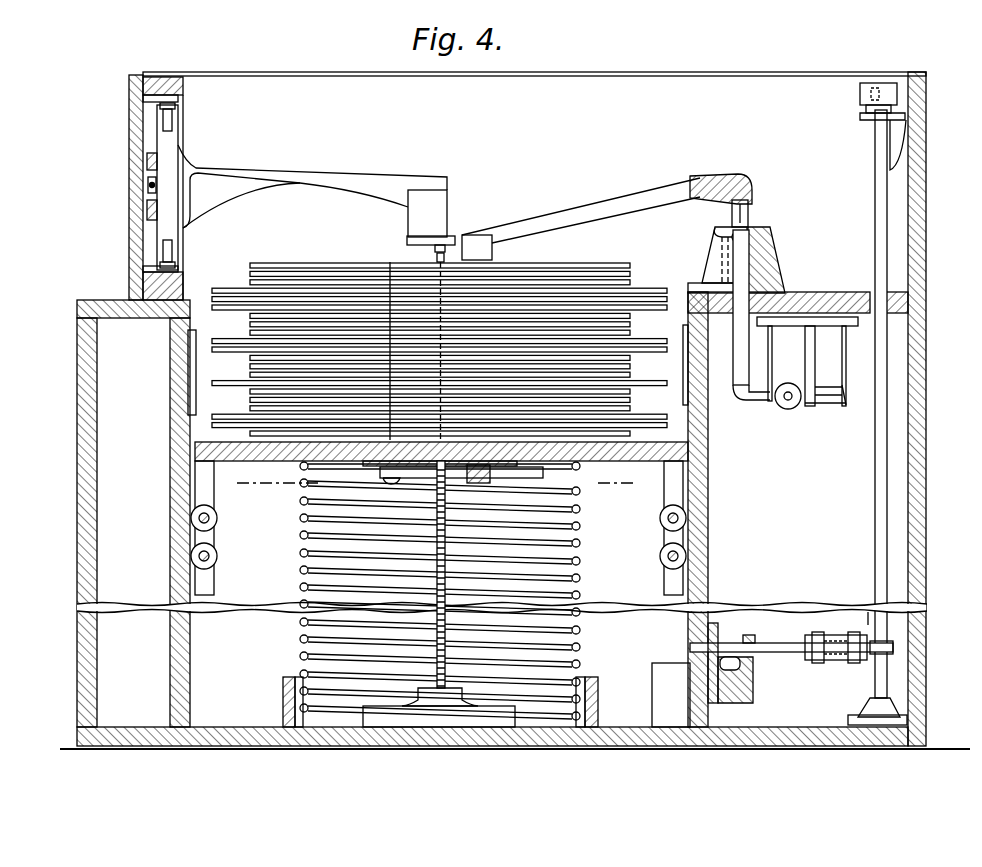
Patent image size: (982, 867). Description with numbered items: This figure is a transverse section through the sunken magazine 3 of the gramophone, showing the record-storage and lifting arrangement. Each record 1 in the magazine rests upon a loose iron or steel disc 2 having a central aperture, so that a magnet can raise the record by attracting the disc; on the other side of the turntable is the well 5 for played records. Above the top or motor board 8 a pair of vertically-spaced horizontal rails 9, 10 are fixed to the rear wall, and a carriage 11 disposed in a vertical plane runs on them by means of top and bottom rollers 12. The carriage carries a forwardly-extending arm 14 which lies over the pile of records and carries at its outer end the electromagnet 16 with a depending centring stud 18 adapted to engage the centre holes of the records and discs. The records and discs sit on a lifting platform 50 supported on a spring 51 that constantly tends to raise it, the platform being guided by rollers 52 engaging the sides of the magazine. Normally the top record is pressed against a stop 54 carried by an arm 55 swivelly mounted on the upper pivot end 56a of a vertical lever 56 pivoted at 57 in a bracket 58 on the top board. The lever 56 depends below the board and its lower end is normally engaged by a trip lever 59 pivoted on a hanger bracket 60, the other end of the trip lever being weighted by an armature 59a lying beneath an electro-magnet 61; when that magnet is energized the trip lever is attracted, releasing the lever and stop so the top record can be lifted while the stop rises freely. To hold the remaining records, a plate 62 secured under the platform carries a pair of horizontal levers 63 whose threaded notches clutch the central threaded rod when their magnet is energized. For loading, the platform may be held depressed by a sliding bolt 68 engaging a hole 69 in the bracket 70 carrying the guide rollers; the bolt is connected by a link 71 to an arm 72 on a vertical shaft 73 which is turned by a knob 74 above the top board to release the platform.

The record 1 is at (302, 263).
The loose disc 2 is at (365, 265).
The sunken magazine 3 is at (243, 706).
The well 5 is at (436, 478).
The top or motor board 8 is at (838, 298).
The horizontal rail 9 is at (178, 101).
The horizontal rail 10 is at (183, 274).
The carriage 11 is at (170, 205).
The rollers 12 is at (176, 127).
The arm 14 is at (290, 176).
The electromagnet 16 is at (447, 203).
The centring stud 18 is at (432, 262).
The lifting platform 50 is at (195, 451).
The spring 51 is at (302, 580).
The rollers 52 is at (217, 517).
The stop 54 is at (495, 252).
The arm 55 is at (560, 212).
The vertical lever 56 is at (714, 280).
The upper pivot end 56a is at (748, 217).
The pivot 57 is at (716, 236).
The bracket 58 is at (768, 258).
The trip lever 59 is at (755, 402).
The armature 59a is at (848, 405).
The hanger bracket 60 is at (790, 408).
The electro-magnet 61 is at (828, 375).
The plate 62 is at (527, 478).
The horizontal lever 63 is at (545, 470).
The sliding bolt 68 is at (775, 643).
The hole 69 is at (705, 587).
The bracket 70 is at (700, 541).
The link 71 is at (845, 641).
The arm 72 is at (893, 648).
The vertical shaft 73 is at (868, 615).
The knob 74 is at (872, 84).